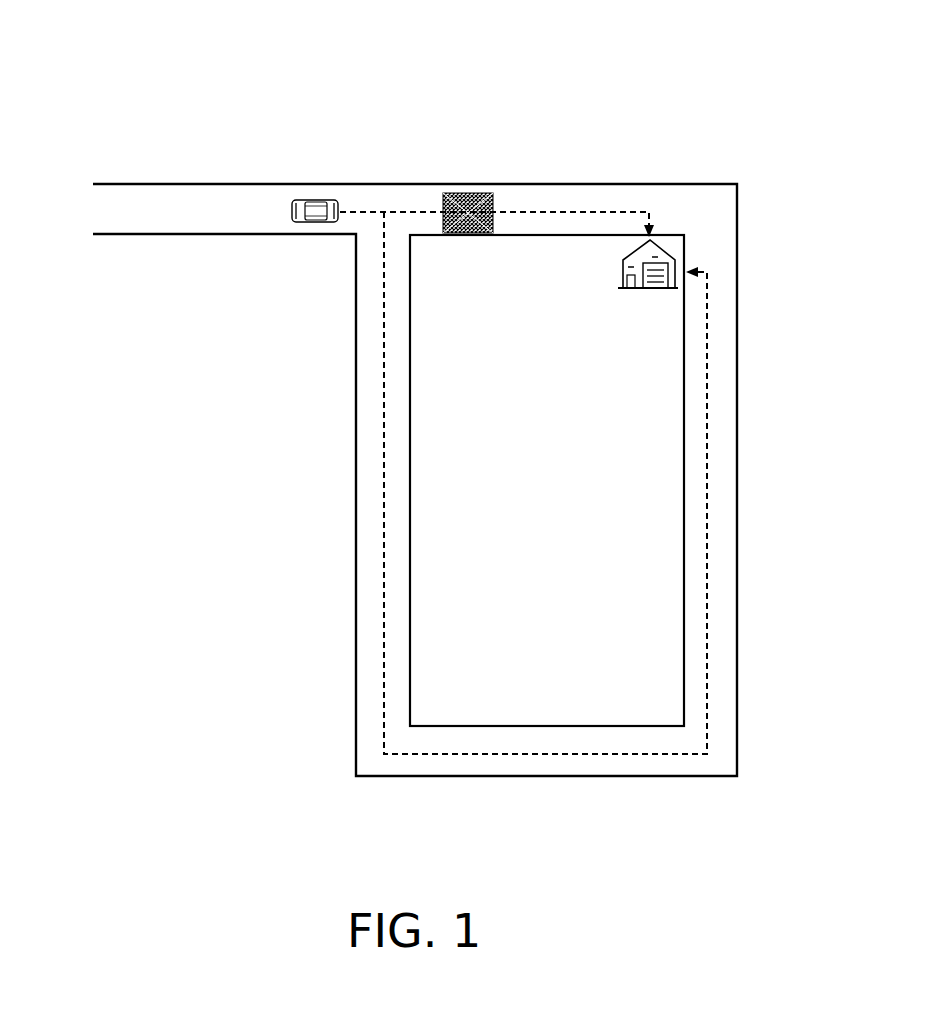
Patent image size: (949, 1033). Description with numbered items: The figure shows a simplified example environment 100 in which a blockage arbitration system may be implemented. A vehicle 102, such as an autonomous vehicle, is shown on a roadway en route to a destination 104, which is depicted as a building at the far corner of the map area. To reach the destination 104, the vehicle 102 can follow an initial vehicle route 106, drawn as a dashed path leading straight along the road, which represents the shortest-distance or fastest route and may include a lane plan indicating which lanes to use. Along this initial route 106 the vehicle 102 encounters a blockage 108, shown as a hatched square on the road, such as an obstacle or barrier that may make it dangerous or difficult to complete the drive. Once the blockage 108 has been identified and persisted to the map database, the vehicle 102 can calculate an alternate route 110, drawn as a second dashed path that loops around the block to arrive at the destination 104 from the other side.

The environment 100 is at (786, 72).
The vehicle 102 is at (318, 193).
The destination 104 is at (653, 257).
The initial vehicle route 106 is at (585, 212).
The blockage 108 is at (472, 195).
The alternate route 110 is at (385, 408).